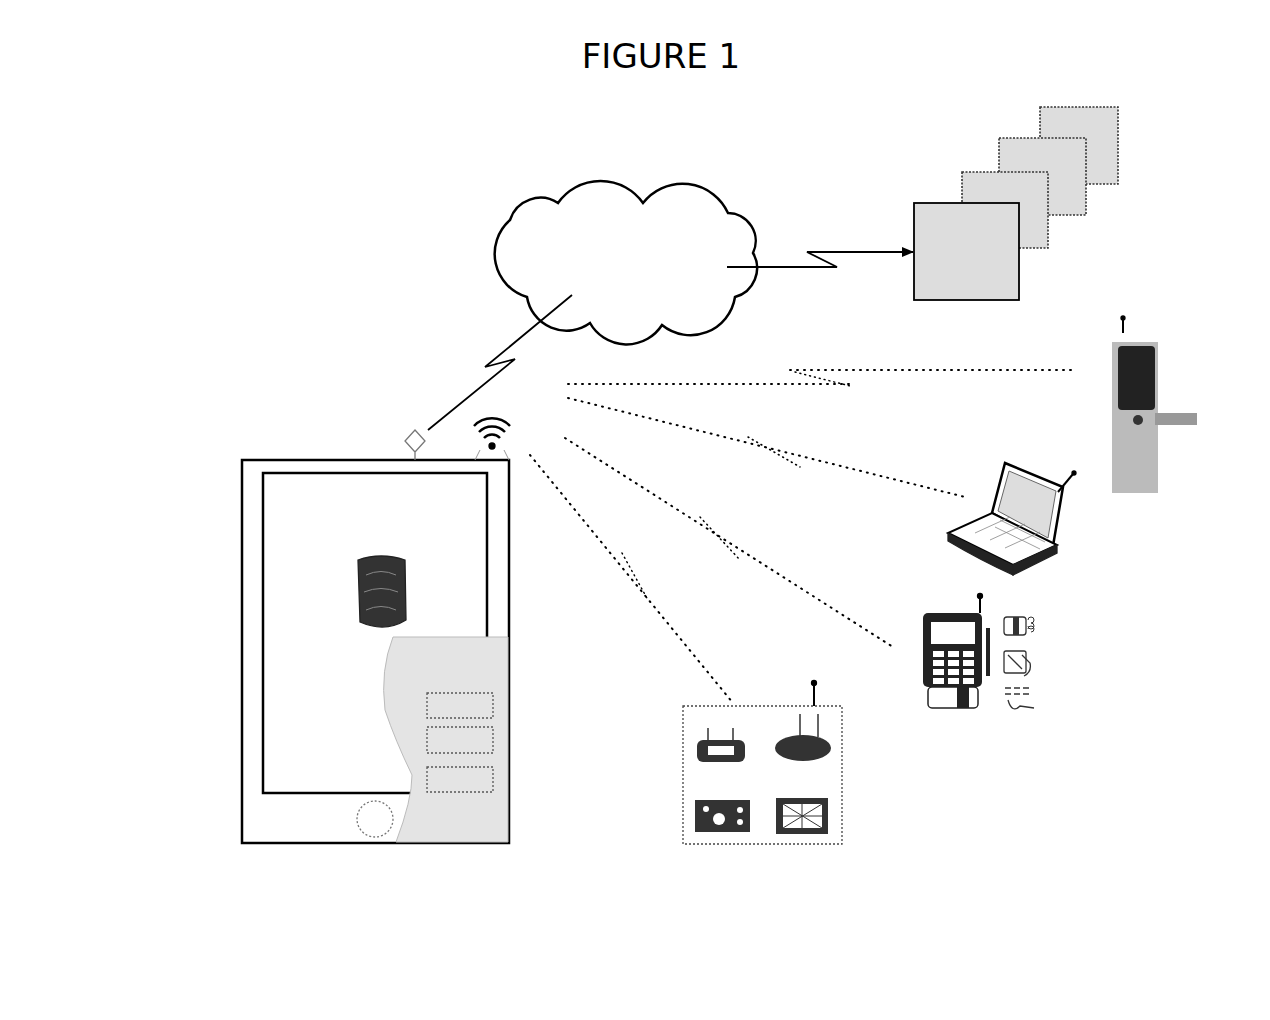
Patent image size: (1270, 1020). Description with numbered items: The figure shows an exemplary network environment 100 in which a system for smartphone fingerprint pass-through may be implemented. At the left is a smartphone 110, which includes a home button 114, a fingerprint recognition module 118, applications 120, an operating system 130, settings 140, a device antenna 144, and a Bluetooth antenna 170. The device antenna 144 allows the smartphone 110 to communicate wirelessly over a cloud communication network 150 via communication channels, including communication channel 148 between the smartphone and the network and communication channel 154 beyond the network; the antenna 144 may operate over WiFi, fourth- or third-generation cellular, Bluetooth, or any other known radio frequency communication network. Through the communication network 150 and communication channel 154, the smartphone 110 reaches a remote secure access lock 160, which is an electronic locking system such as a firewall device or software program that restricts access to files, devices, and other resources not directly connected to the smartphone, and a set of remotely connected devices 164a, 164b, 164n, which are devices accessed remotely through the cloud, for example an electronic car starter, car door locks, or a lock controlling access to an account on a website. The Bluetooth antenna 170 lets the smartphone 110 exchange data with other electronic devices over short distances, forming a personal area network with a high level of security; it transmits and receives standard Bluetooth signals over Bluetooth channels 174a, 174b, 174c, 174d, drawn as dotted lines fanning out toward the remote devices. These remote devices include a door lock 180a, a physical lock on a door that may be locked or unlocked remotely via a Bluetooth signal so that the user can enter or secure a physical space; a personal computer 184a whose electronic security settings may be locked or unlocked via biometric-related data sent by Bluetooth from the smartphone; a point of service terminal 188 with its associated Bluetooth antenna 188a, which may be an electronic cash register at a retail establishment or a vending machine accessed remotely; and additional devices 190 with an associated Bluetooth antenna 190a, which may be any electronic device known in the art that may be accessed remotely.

The network environment 100 is at (166, 60).
The smartphone 110 is at (288, 457).
The home button 114 is at (347, 819).
The fingerprint recognition module 118 is at (347, 593).
The applications 120 is at (497, 776).
The operating system 130 is at (497, 703).
The settings 140 is at (497, 739).
The antenna 144 is at (409, 432).
The communication channel 148 is at (479, 344).
The communication network 150 is at (614, 273).
The communication channel 154 is at (820, 247).
The remote secure access lock 160 is at (957, 202).
The remotely connected device 164a is at (1047, 219).
The remotely connected device 164b is at (1085, 186).
The remotely connected device 164n is at (1123, 148).
The Bluetooth antenna 170 is at (519, 405).
The Bluetooth channel 174a is at (821, 374).
The Bluetooth channel 174b is at (766, 447).
The Bluetooth channel 174c is at (729, 542).
The Bluetooth channel 174d is at (631, 579).
The door lock 180a is at (1110, 326).
The personal computer 184a is at (1066, 470).
The point of service terminal 188 is at (1006, 644).
The point-of-service terminal 188a is at (968, 590).
The additional devices 190 is at (725, 737).
The Bluetooth antenna 190a is at (806, 680).